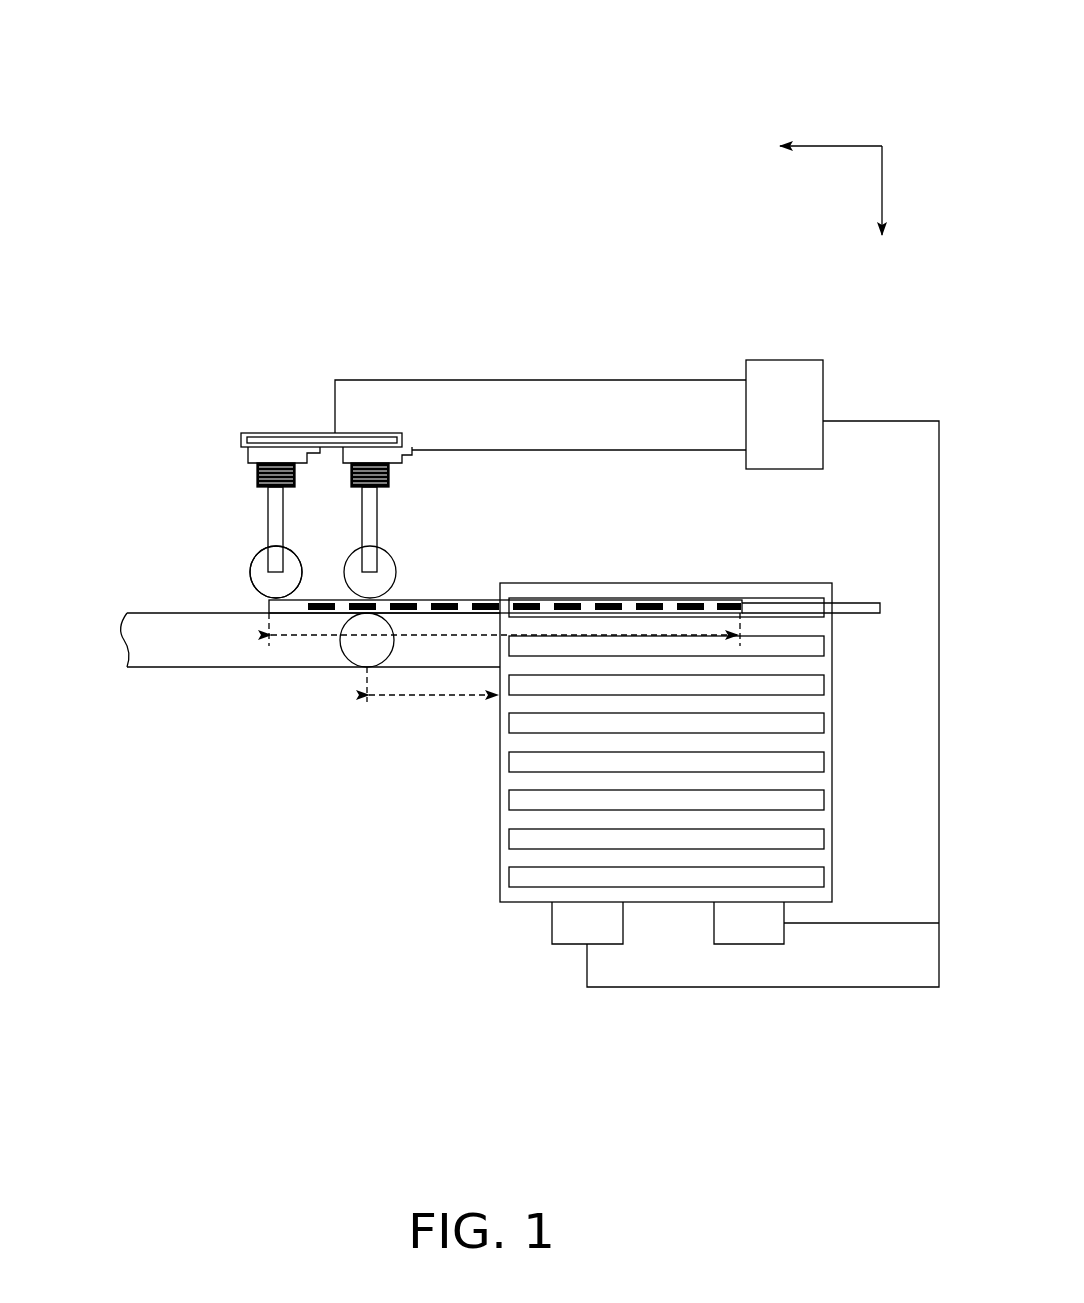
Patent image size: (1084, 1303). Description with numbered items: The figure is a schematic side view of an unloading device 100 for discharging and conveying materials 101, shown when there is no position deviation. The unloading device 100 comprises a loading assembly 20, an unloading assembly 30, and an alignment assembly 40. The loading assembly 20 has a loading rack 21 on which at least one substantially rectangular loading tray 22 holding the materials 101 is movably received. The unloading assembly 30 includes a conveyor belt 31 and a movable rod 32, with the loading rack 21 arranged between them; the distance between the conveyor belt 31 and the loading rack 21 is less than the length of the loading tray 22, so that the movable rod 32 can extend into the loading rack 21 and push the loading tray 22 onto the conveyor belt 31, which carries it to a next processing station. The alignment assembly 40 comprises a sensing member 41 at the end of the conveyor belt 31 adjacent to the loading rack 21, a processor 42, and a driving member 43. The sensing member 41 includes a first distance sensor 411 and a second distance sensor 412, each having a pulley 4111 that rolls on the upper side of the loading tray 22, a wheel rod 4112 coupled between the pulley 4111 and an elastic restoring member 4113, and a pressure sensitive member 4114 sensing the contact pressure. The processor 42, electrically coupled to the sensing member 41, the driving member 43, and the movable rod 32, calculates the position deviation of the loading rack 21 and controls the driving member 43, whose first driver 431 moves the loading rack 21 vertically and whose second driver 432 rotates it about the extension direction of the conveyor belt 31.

The unloading device 100 is at (538, 53).
The loading assembly 20 is at (820, 663).
The loading rack 21 is at (827, 702).
The loading tray 22 is at (463, 607).
The materials 101 is at (525, 608).
The unloading assembly 30 is at (100, 650).
The conveyor belt 31 is at (137, 613).
The movable rod 32 is at (860, 610).
The alignment assembly 40 is at (200, 388).
The sensing member 41 is at (352, 337).
The first distance sensor 411 is at (274, 532).
The pulley 4111 is at (267, 585).
The wheel rod 4112 is at (260, 557).
The elastic restoring member 4113 is at (257, 480).
The pressure sensitive member 4114 is at (273, 457).
The second distance sensor 412 is at (381, 512).
The processor 42 is at (790, 373).
The driving member 43 is at (515, 930).
The first driver 431 is at (572, 927).
The second driver 432 is at (747, 935).